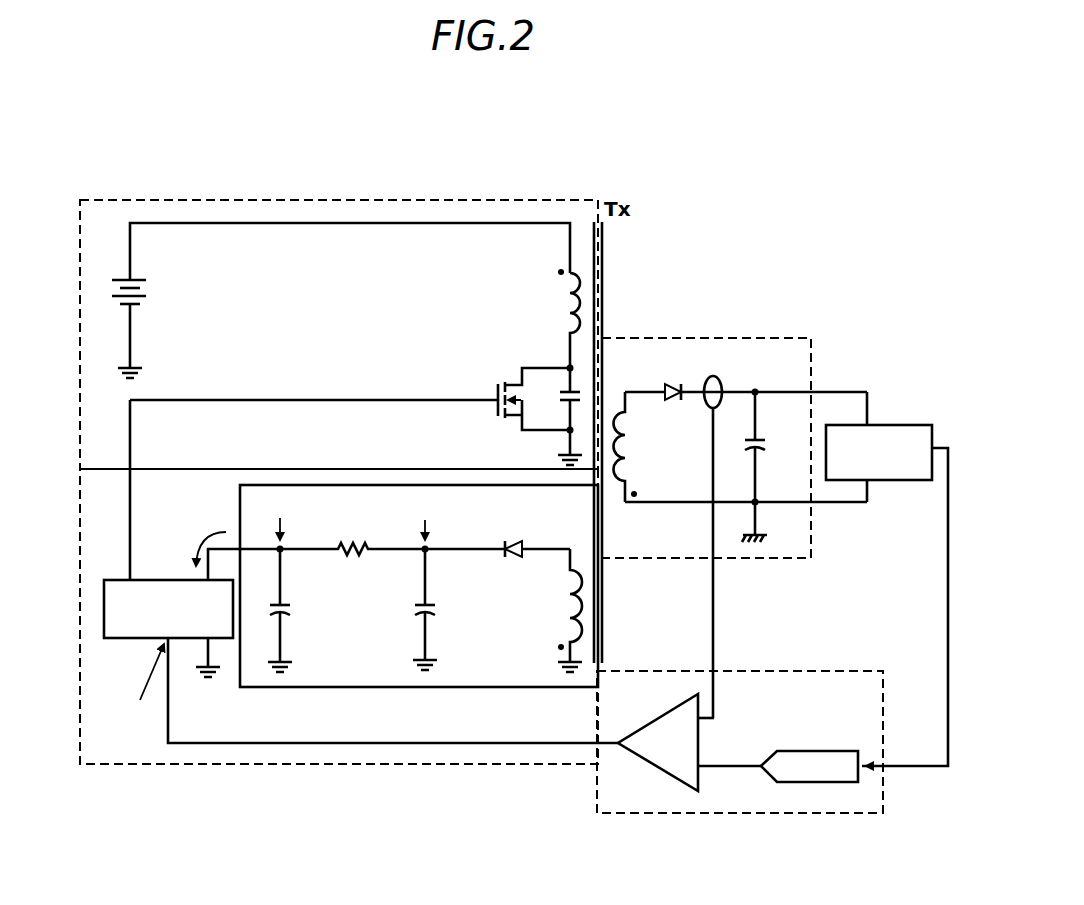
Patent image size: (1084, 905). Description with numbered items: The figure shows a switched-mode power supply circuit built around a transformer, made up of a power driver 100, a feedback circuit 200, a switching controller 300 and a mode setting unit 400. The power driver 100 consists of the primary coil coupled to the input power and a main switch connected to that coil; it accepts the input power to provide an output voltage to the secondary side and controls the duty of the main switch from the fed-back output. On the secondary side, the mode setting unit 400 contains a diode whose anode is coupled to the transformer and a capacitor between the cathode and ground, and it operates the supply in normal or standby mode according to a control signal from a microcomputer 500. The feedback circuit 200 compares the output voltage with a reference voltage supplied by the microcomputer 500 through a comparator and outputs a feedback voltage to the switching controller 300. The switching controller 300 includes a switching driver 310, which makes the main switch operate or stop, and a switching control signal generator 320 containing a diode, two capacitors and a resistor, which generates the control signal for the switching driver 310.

The power driver 100 is at (394, 200).
The feedback circuit 200 is at (835, 671).
The switching controller 300 is at (150, 764).
The switching driver 310 is at (137, 640).
The switching control signal generator 320 is at (328, 687).
The mode setting unit 400 is at (715, 338).
The microcomputer 500 is at (892, 425).